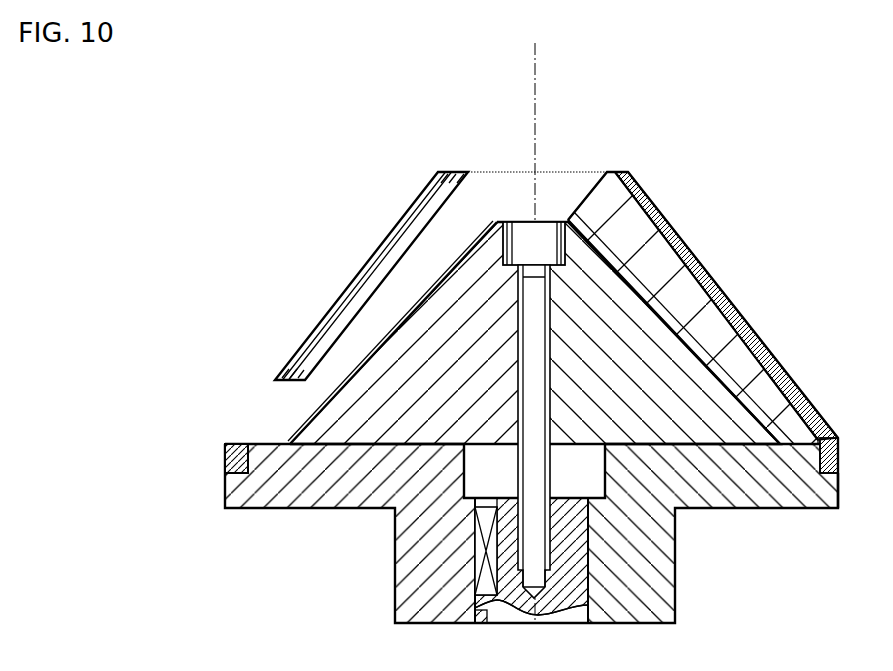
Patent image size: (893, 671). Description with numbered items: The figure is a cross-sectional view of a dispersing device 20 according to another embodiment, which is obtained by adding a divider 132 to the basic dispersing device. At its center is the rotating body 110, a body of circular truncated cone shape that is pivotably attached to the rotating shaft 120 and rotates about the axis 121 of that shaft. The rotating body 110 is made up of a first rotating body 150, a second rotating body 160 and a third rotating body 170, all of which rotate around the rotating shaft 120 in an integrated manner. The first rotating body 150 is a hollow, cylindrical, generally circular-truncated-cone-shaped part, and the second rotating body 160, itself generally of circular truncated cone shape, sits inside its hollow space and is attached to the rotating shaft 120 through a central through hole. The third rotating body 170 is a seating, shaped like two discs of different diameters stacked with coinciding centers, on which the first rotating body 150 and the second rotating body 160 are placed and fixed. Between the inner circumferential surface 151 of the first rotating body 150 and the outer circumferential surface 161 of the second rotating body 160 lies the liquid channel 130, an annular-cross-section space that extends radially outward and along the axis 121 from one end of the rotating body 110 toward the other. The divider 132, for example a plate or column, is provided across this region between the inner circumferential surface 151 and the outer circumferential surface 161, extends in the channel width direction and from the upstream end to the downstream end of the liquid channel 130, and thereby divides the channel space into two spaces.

The dispersing device 20 is at (302, 80).
The rotating body 110 is at (360, 164).
The rotating shaft 120 is at (703, 315).
The axis 121 is at (537, 98).
The liquid channel 130 is at (443, 238).
The divider 132 is at (665, 268).
The first rotating body 150 is at (413, 330).
The inner circumferential surface 151 is at (697, 278).
The second rotating body 160 is at (387, 243).
The outer circumferential surface 161 is at (680, 340).
The third rotating body 170 is at (287, 462).